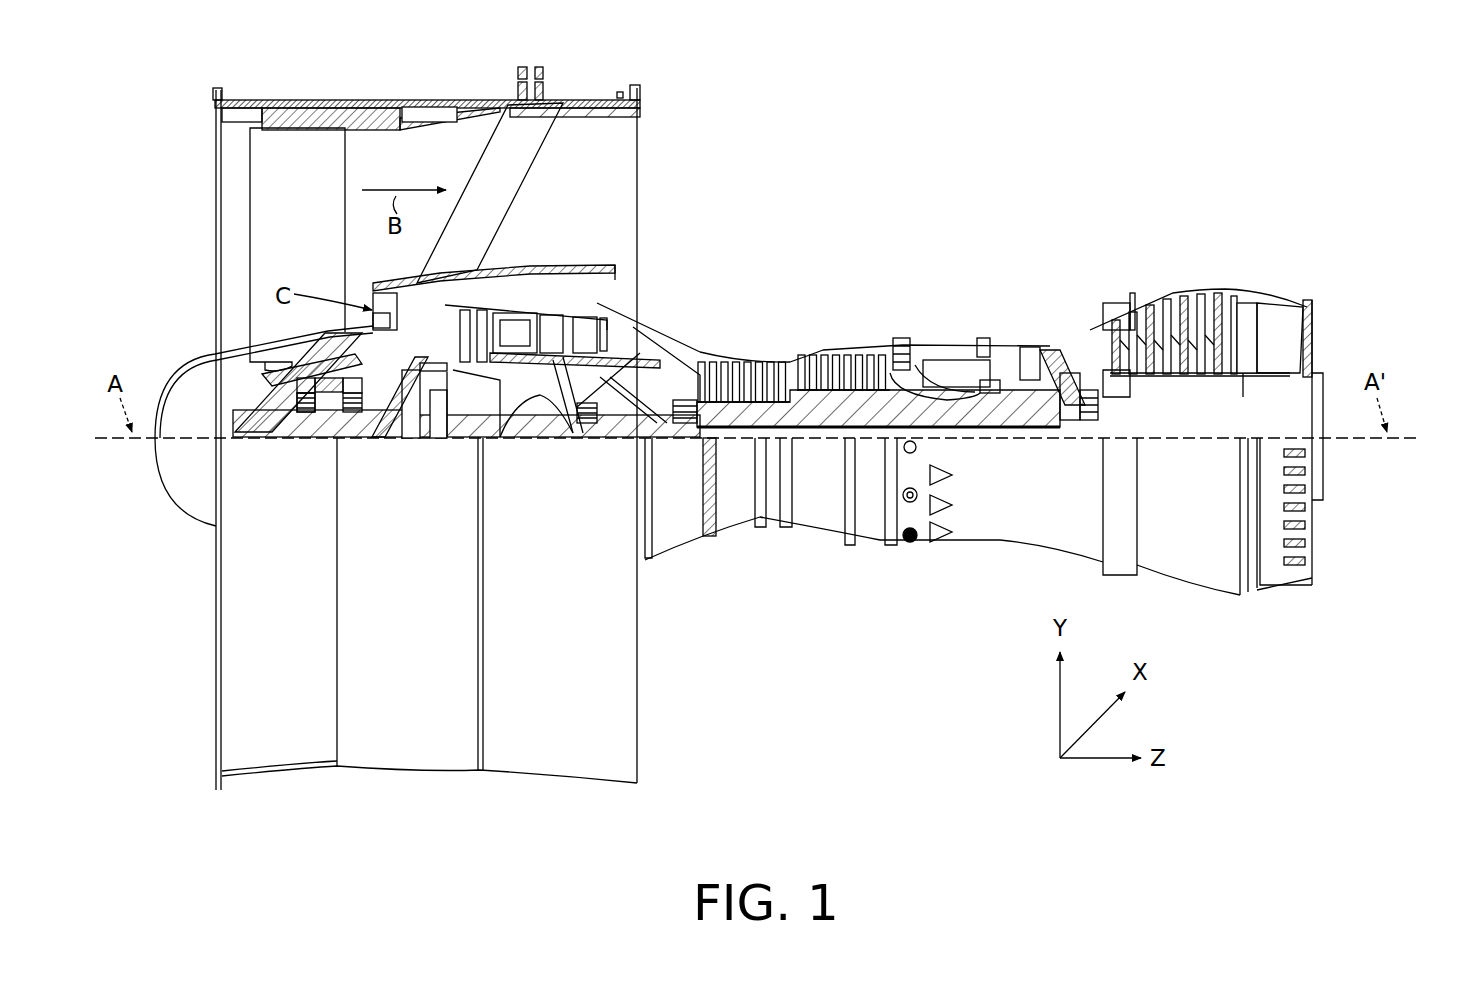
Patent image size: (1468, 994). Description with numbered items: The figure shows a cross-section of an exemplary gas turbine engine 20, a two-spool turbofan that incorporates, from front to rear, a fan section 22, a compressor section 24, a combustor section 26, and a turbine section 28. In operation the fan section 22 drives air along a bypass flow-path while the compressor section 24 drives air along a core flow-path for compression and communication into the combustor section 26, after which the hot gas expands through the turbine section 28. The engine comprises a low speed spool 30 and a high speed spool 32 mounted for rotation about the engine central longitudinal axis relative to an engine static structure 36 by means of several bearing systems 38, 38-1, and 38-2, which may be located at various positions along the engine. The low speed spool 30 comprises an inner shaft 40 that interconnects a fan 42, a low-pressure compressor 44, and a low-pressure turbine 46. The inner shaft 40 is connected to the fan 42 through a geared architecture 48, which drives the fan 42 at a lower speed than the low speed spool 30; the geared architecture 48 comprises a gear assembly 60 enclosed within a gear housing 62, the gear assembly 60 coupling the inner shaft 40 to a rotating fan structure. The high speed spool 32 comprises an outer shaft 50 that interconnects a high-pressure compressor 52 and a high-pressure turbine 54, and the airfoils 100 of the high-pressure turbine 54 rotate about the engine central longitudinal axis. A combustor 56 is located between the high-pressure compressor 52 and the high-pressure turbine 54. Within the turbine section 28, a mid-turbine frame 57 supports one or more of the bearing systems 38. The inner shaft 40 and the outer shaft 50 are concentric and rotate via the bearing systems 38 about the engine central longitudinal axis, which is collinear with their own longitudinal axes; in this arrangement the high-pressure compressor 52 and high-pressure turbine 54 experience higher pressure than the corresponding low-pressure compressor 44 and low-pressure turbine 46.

The gas turbine engine 20 is at (1008, 132).
The fan section 22 is at (210, 76).
The compressor section 24 is at (485, 220).
The combustor section 26 is at (897, 220).
The turbine section 28 is at (1245, 220).
The low speed spool 30 is at (825, 462).
The high speed spool 32 is at (855, 360).
The engine static structure 36 is at (402, 750).
The bearing system 38 is at (1083, 434).
The bearing system 38-1 is at (310, 406).
The bearing system 38-2 is at (585, 424).
The inner shaft 40 is at (660, 445).
The fan 42 is at (281, 236).
The low-pressure compressor 44 is at (566, 326).
The low-pressure turbine 46 is at (1170, 313).
The geared architecture 48 is at (437, 456).
The outer shaft 50 is at (950, 432).
The high-pressure compressor 52 is at (800, 396).
The high-pressure turbine 54 is at (1028, 346).
The combustor 56 is at (950, 372).
The mid-turbine frame 57 is at (1068, 340).
The gear assembly 60 is at (446, 426).
The gear housing 62 is at (450, 386).
The airfoils 100 is at (1010, 350).